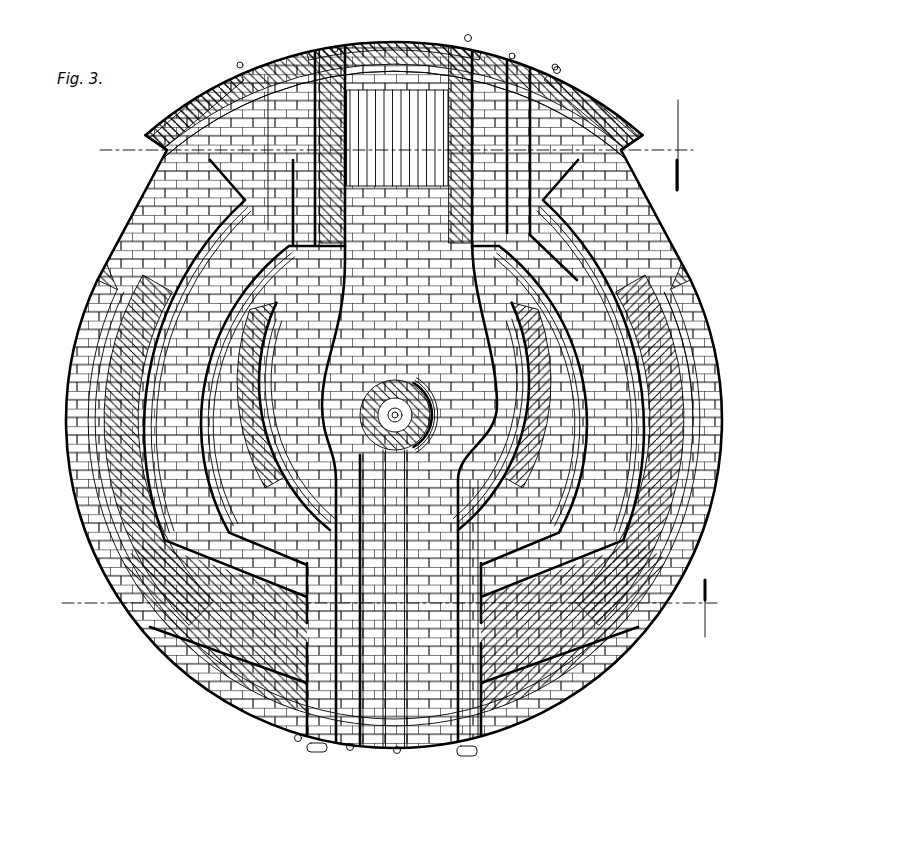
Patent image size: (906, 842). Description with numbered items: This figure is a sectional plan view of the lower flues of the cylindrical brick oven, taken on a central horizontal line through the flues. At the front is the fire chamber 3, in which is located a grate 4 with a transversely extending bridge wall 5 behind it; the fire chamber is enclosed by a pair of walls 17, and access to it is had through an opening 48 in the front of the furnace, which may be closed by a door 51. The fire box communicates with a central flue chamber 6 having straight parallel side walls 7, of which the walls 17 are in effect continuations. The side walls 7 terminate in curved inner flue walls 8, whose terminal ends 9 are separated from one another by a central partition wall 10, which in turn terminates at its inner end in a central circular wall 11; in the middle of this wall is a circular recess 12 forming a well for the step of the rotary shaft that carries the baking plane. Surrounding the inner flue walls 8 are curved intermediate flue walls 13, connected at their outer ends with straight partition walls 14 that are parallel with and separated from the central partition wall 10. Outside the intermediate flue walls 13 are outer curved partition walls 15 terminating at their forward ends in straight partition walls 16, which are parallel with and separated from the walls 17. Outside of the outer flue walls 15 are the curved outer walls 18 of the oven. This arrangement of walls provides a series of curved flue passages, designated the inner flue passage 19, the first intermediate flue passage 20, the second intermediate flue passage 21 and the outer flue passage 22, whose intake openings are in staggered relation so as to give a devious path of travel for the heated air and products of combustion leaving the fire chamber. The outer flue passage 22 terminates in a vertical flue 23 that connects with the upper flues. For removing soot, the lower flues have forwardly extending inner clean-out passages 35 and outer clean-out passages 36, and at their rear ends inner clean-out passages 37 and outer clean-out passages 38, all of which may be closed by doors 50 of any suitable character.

The fire chamber 3 is at (408, 395).
The grate 4 is at (397, 138).
The bridge wall 5 is at (394, 145).
The central flue chamber 6 is at (703, 199).
The side walls 7 is at (83, 310).
The inner flue walls 8 is at (170, 520).
The terminal ends 9 is at (137, 630).
The central partition wall 10 is at (395, 745).
The central circular wall 11 is at (706, 300).
The circular recess 12 is at (688, 268).
The intermediate flue walls 13 is at (145, 505).
The straight partition walls 14 is at (273, 733).
The outer curved partition walls 15 is at (105, 470).
The straight partition walls 16 is at (267, 77).
The walls 17 is at (335, 45).
The outer walls 18 is at (70, 430).
The inner flue passage 19 is at (128, 574).
The first intermediate flue passage 20 is at (120, 607).
The second intermediate flue passage 21 is at (125, 490).
The outer flue passage 22 is at (88, 452).
The vertical flue 23 is at (233, 97).
The inner clean-out passages 35 is at (335, 49).
The outer clean-out passages 36 is at (245, 115).
The inner clean-out passages 37 is at (343, 747).
The outer clean-out passages 38 is at (293, 737).
The opening 48 is at (407, 60).
The doors 50 is at (298, 742).
The door 51 is at (386, 38).